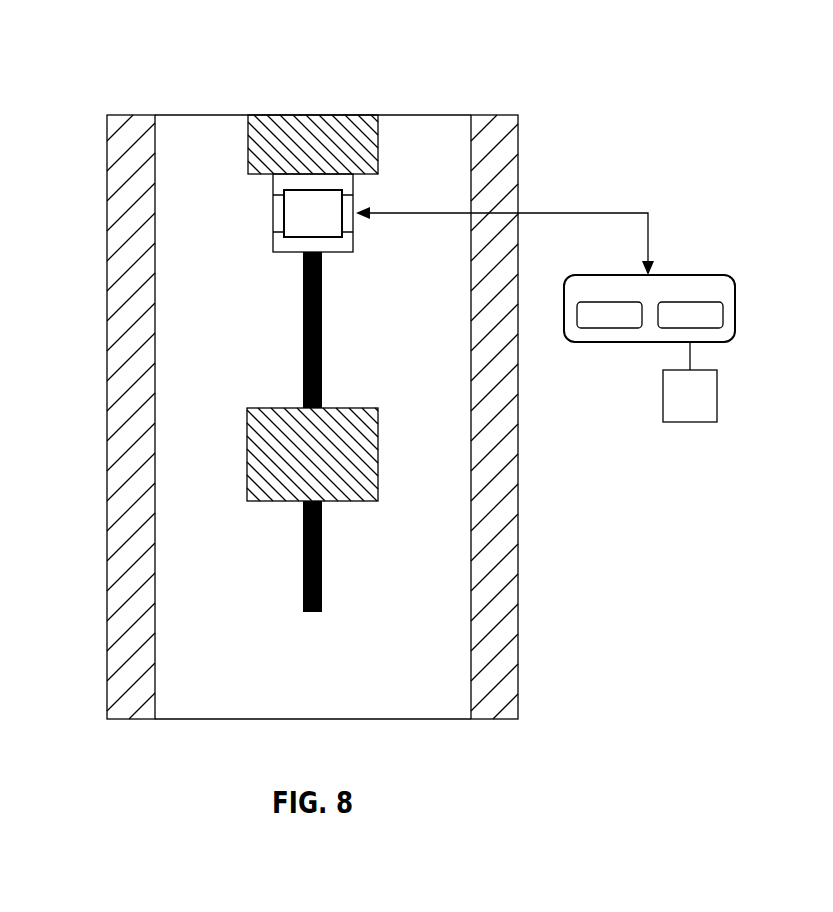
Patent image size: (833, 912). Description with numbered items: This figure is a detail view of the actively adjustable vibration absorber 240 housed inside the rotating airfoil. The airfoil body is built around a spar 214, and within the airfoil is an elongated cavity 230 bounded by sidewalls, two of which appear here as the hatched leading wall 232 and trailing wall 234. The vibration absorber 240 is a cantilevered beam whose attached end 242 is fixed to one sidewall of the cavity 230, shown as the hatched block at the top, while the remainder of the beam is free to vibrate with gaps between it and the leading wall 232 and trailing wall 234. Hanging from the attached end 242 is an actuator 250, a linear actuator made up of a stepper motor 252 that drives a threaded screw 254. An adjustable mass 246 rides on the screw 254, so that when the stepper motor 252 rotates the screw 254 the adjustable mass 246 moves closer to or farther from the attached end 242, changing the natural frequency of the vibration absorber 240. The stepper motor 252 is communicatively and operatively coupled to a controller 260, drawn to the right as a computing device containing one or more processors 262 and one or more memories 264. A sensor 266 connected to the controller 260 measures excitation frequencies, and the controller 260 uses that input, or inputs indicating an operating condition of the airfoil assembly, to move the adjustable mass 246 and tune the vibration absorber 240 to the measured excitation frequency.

The spar 214 is at (315, 449).
The cavity 230 is at (220, 688).
The leading wall 232 is at (150, 328).
The trailing wall 234 is at (471, 522).
The vibration absorber 240 is at (314, 317).
The attached end 242 is at (342, 140).
The adjustable mass 246 is at (265, 447).
The actuator 250 is at (301, 432).
The stepper motor 252 is at (347, 240).
The screw 254 is at (323, 555).
The controller 260 is at (687, 280).
The processor 262 is at (612, 302).
The memory 264 is at (723, 316).
The sensor 266 is at (717, 396).